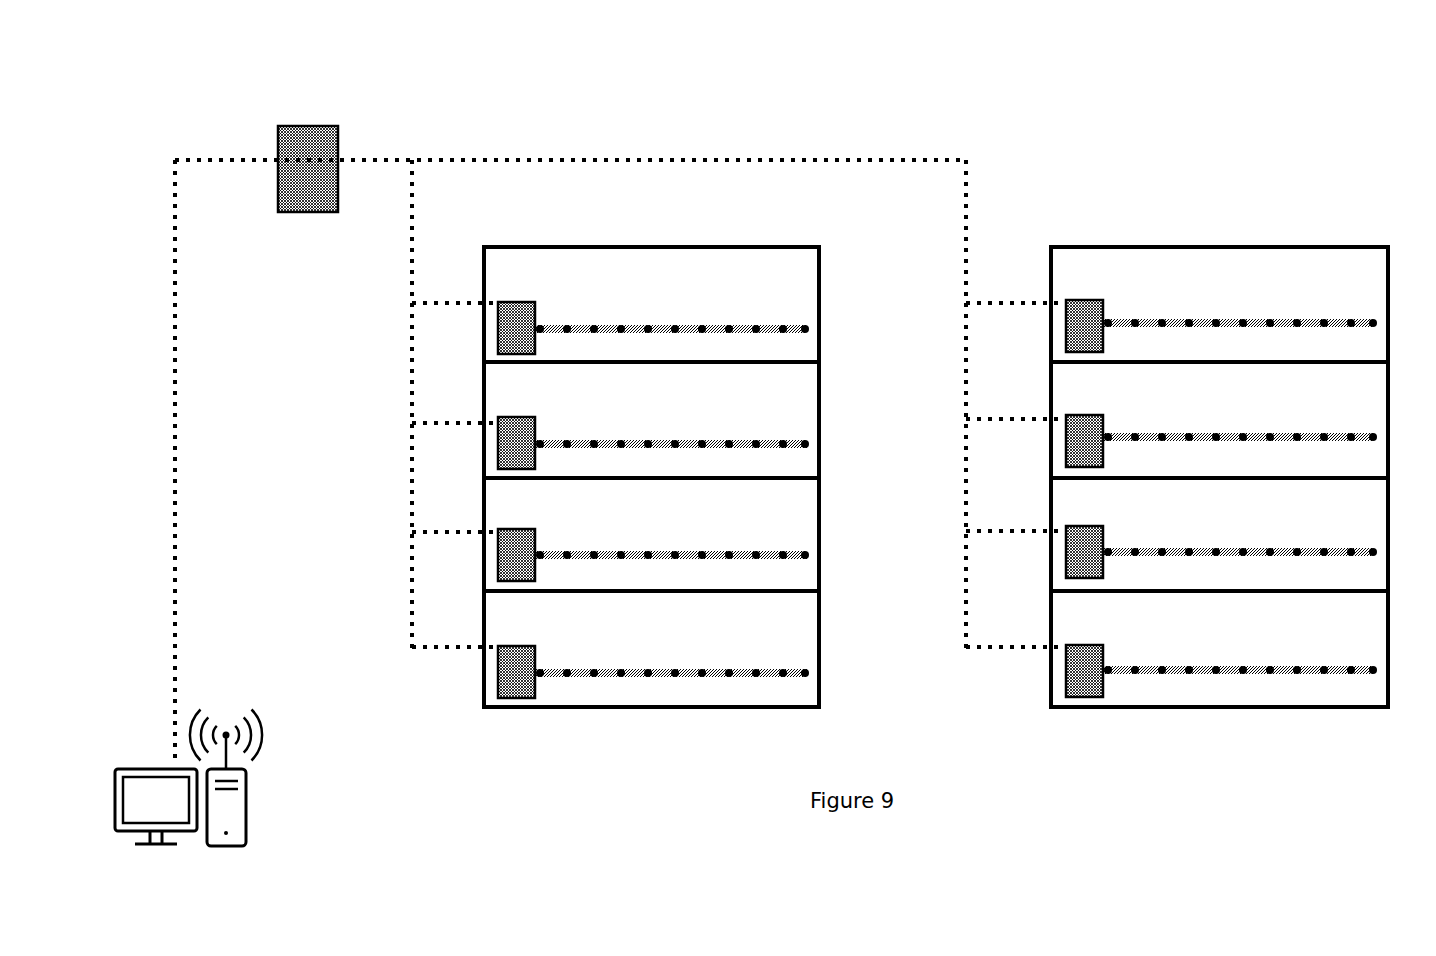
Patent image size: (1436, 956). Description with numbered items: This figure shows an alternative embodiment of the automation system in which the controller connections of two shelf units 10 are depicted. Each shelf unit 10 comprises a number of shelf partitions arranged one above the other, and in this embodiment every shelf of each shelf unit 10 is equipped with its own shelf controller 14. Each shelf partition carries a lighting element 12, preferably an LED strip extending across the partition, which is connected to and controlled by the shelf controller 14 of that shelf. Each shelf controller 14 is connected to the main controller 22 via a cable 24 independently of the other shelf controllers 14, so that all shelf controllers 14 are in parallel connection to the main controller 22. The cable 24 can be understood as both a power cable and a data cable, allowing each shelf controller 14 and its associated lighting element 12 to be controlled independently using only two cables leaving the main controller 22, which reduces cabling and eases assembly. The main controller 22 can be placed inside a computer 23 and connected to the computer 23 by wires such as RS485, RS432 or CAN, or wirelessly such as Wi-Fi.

The shelf unit 10 is at (563, 729).
The lighting element 12 is at (776, 321).
The shelf controller 14 is at (526, 301).
The main controller 22 is at (307, 114).
The computer 23 is at (222, 864).
The cable 24 is at (385, 152).